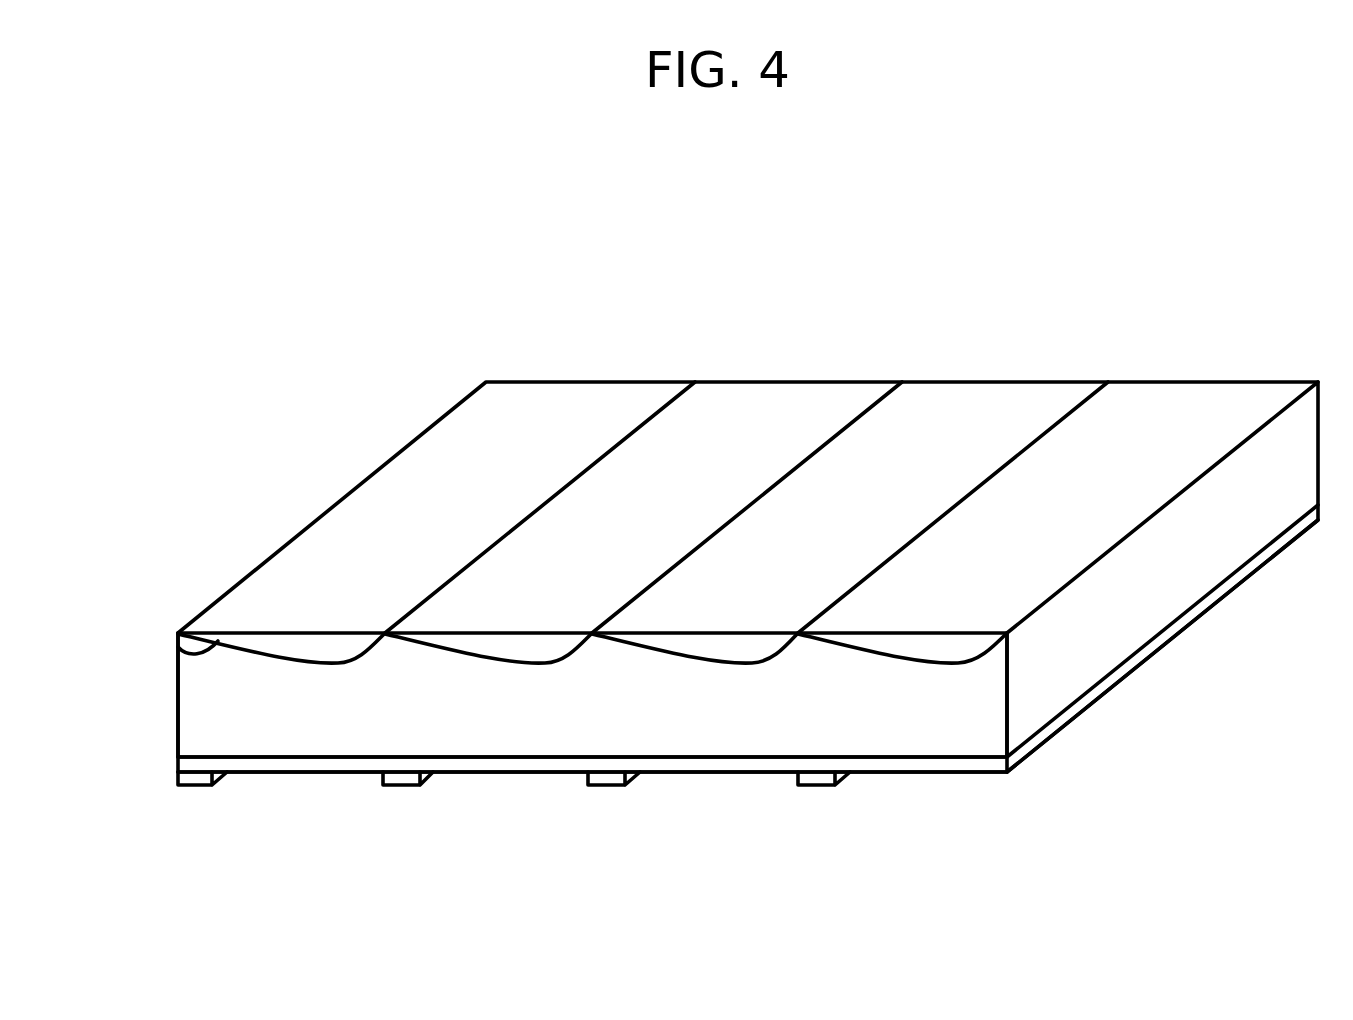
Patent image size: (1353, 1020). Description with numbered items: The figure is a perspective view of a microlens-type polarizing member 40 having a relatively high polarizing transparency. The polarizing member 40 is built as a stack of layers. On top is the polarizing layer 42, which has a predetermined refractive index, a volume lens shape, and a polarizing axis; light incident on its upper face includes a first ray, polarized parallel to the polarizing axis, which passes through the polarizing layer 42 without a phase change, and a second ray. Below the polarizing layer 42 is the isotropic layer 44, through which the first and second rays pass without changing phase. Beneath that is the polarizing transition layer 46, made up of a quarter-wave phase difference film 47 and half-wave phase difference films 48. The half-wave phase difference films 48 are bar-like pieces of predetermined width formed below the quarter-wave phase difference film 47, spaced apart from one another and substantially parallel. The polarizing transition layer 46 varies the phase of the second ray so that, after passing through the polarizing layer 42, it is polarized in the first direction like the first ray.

The polarizing member 40 is at (825, 292).
The polarizing layer 42 is at (178, 647).
The isotropic layer 44 is at (202, 688).
The polarizing transition layer 46 is at (675, 650).
The λ/4 phase difference film 47 is at (187, 765).
The λ/2 phase difference film 48 is at (187, 778).